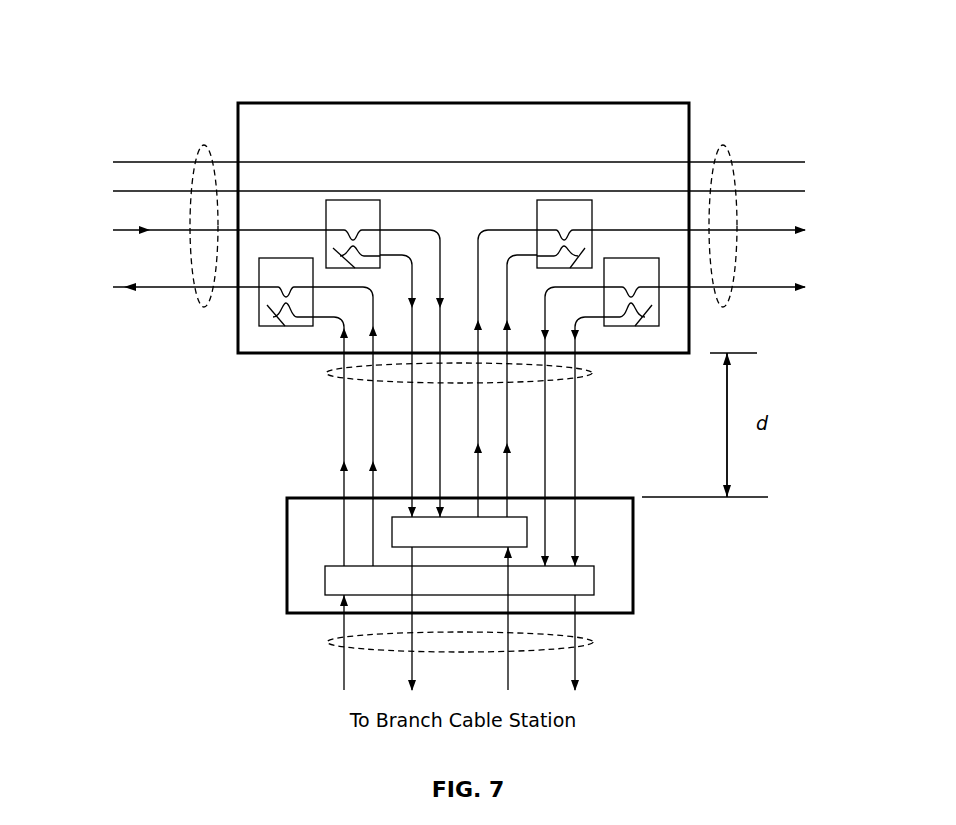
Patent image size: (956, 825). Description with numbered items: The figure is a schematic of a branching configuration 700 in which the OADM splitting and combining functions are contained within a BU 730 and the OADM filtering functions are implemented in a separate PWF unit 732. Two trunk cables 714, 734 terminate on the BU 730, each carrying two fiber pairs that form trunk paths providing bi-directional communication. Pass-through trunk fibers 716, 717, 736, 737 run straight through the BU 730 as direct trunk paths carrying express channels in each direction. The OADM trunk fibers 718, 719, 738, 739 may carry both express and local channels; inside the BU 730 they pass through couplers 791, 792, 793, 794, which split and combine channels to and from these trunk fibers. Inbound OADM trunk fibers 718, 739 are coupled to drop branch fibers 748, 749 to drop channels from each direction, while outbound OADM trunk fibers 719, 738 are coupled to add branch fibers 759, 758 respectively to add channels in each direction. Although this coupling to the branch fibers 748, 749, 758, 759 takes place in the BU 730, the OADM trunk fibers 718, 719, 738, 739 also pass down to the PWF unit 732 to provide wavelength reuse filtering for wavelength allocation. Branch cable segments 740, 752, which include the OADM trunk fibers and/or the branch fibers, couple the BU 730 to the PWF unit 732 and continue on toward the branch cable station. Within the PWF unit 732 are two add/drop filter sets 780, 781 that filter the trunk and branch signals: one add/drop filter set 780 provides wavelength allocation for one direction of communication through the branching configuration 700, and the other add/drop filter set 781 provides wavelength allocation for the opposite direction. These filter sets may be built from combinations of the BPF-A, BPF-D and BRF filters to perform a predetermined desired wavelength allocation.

The branching configuration 700 is at (178, 53).
The trunk cable 714 is at (204, 144).
The pass-through trunk fiber 716 is at (132, 161).
The pass-through trunk fiber 717 is at (128, 190).
The inbound OADM trunk fiber 718 is at (130, 228).
The outbound OADM trunk fiber 719 is at (127, 285).
The BU 730 is at (422, 103).
The PWF unit 732 is at (287, 545).
The trunk cable 734 is at (723, 144).
The pass-through trunk fiber 736 is at (805, 162).
The pass-through trunk fiber 737 is at (805, 191).
The outbound OADM trunk fiber 738 is at (805, 230).
The inbound OADM trunk fiber 739 is at (805, 287).
The branch cable segment 740 is at (327, 373).
The drop branch fiber 748 is at (440, 423).
The drop branch fiber 749 is at (577, 388).
The branch cable segment 752 is at (328, 643).
The add branch fiber 758 is at (547, 416).
The add branch fiber 759 is at (344, 395).
The add/drop filter set 780 is at (459, 532).
The add/drop filter set 781 is at (459, 580).
The coupler 791 is at (326, 207).
The coupler 792 is at (592, 207).
The coupler 793 is at (260, 318).
The coupler 794 is at (659, 317).